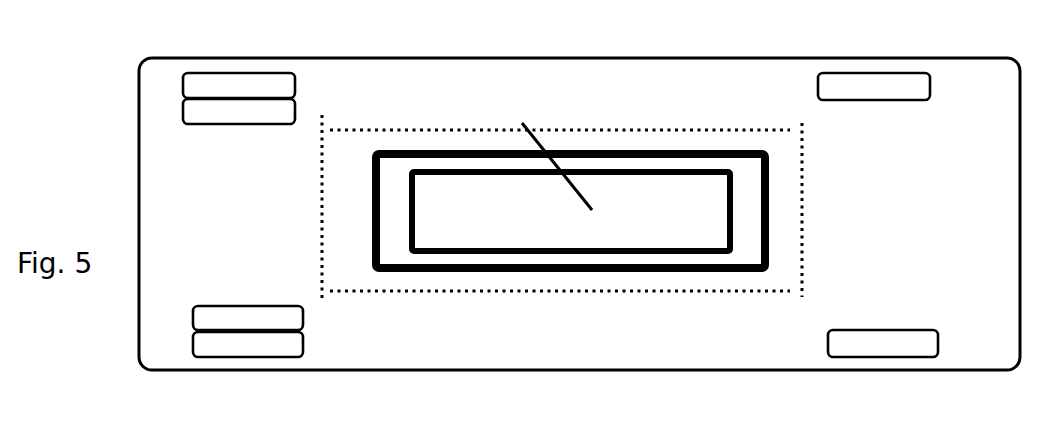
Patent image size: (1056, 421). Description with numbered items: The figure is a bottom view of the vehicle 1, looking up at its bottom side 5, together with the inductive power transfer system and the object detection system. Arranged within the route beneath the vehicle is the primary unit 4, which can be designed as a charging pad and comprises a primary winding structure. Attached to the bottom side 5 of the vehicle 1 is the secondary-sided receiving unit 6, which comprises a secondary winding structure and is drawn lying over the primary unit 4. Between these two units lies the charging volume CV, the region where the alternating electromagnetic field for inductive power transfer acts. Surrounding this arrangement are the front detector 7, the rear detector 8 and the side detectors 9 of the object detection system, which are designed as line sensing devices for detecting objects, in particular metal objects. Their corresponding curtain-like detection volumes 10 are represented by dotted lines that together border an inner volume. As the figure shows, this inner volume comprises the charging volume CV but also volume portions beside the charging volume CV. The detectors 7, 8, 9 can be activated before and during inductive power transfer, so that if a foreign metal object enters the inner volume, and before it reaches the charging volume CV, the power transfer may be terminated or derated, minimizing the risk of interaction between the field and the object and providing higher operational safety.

The vehicle 1 is at (1020, 233).
The primary unit 4 is at (440, 267).
The bottom side 5 is at (530, 73).
The secondary-sided receiving unit 6 is at (510, 250).
The front detector 7 is at (802, 233).
The rear detector 8 is at (322, 258).
The side detectors 9 is at (632, 130).
The detection volume 10 is at (562, 214).
The charging volume CV is at (547, 149).